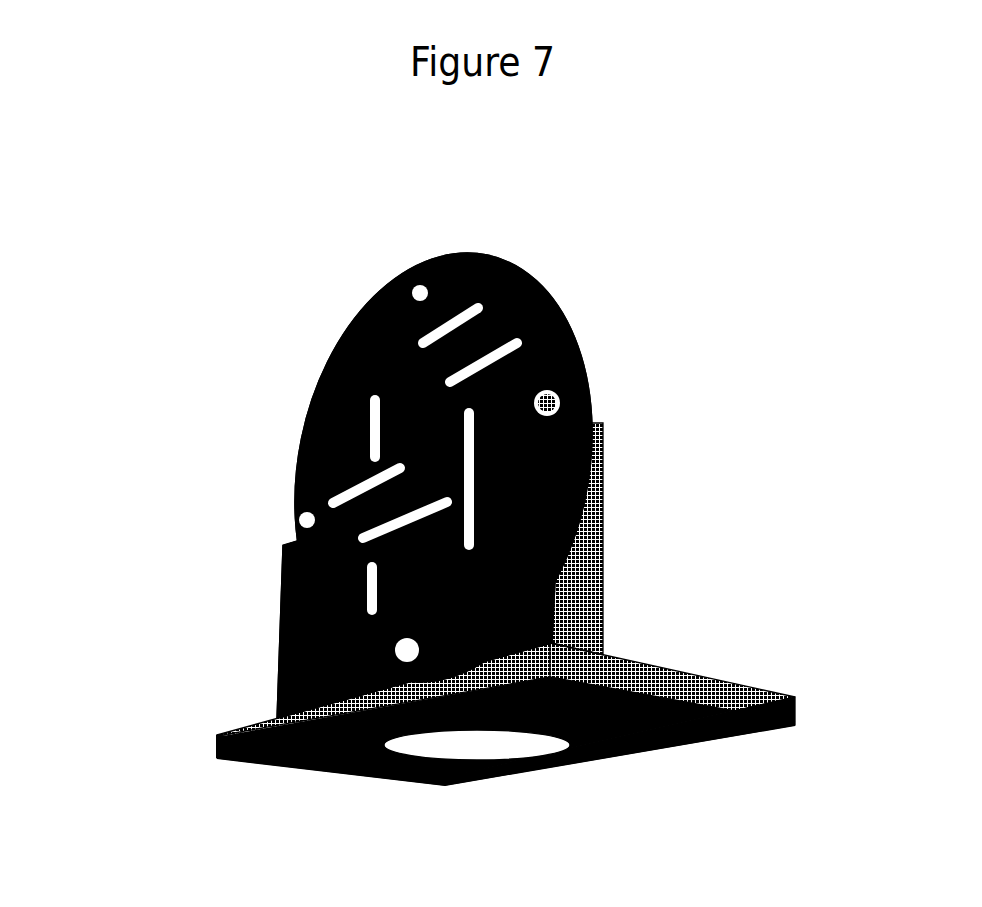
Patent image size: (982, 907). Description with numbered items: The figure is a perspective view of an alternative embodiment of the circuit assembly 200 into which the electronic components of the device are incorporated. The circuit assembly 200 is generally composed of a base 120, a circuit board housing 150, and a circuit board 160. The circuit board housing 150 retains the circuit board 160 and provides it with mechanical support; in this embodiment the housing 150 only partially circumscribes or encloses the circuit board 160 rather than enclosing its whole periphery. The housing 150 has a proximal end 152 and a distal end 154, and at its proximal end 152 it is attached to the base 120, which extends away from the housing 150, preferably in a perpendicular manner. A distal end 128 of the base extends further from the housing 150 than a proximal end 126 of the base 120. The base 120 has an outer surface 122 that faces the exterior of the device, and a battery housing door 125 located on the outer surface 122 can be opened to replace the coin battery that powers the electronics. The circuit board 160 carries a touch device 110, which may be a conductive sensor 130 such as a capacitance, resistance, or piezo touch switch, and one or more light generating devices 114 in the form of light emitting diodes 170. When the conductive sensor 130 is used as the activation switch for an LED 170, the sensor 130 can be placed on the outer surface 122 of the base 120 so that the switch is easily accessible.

The circuit assembly 200 is at (607, 233).
The touch device 110 is at (365, 742).
The light generating device 114 is at (588, 377).
The base 120 is at (742, 682).
The outer surface 122 is at (277, 757).
The battery housing door 125 is at (607, 762).
The proximal end 126 is at (217, 742).
The distal end 128 is at (757, 737).
The conductive sensor 130 is at (357, 698).
The circuit board housing 150 is at (605, 527).
The proximal end 152 is at (277, 705).
The distal end 154 is at (278, 555).
The circuit board 160 is at (300, 469).
The light emitting diode 170 is at (397, 291).